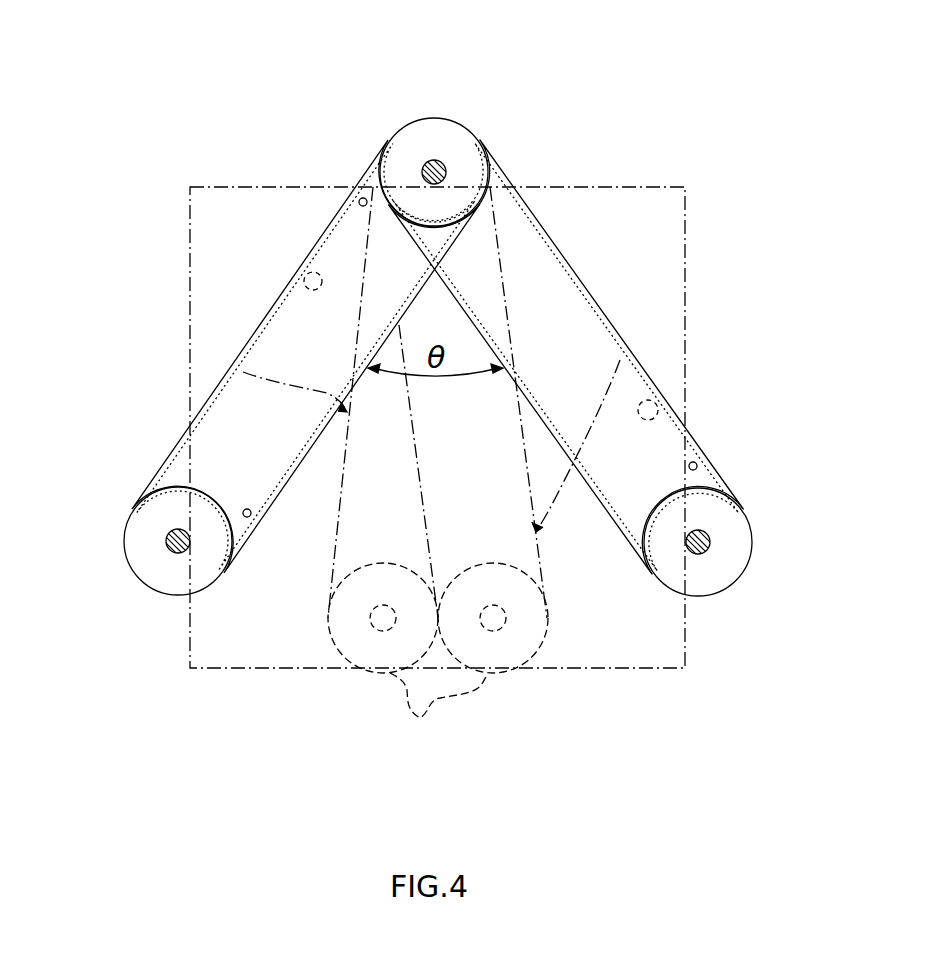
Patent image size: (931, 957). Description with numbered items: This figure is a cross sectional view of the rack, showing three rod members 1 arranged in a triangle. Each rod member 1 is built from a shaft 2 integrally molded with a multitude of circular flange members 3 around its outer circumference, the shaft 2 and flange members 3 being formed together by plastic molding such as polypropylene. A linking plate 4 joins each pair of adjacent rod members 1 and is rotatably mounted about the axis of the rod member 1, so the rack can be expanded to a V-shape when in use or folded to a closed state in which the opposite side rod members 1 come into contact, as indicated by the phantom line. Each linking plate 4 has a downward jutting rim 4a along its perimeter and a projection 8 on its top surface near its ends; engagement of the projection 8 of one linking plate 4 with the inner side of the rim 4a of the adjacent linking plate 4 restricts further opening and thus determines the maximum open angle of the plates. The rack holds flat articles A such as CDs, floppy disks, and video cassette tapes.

The rod member 1 is at (469, 110).
The shaft 2 is at (428, 168).
The flange member 3 is at (477, 127).
The linking plate 4 is at (236, 355).
The rim 4a is at (304, 280).
The projection 8 is at (359, 203).
The flat article A is at (687, 242).